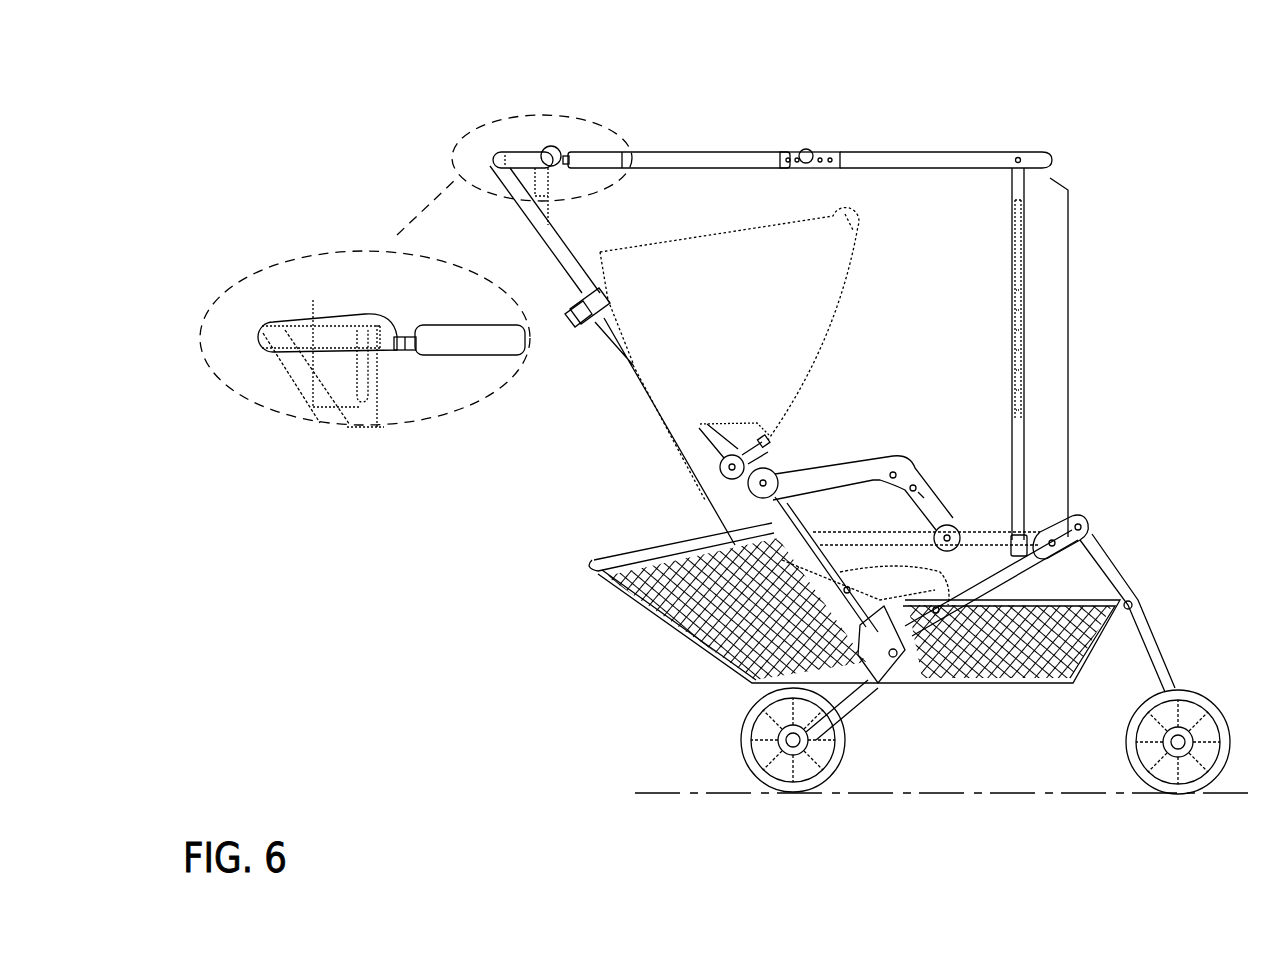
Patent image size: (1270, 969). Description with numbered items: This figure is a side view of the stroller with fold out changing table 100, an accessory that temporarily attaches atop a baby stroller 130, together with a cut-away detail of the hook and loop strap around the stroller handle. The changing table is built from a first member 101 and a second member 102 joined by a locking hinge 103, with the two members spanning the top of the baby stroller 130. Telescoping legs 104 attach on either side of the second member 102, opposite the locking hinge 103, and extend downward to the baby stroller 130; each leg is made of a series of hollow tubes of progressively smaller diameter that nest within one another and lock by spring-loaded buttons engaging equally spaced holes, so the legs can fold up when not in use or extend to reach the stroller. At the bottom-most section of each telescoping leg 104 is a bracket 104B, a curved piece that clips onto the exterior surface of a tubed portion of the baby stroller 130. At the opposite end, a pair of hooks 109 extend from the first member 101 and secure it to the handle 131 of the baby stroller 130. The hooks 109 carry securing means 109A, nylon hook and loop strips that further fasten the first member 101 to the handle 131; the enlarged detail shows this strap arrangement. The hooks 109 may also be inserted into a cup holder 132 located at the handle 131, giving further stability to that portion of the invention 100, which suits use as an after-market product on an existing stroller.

The stroller with fold out changing table 100 is at (1037, 118).
The first member 101 is at (722, 158).
The second member 102 is at (925, 162).
The locking hinge 103 is at (806, 150).
The telescoping legs 104 is at (1068, 350).
The bracket 104B is at (1022, 548).
The hooks 109 is at (553, 150).
The securing means 109A is at (345, 352).
The baby stroller 130 is at (697, 397).
The handle 131 is at (525, 160).
The cup holder 132 is at (349, 398).